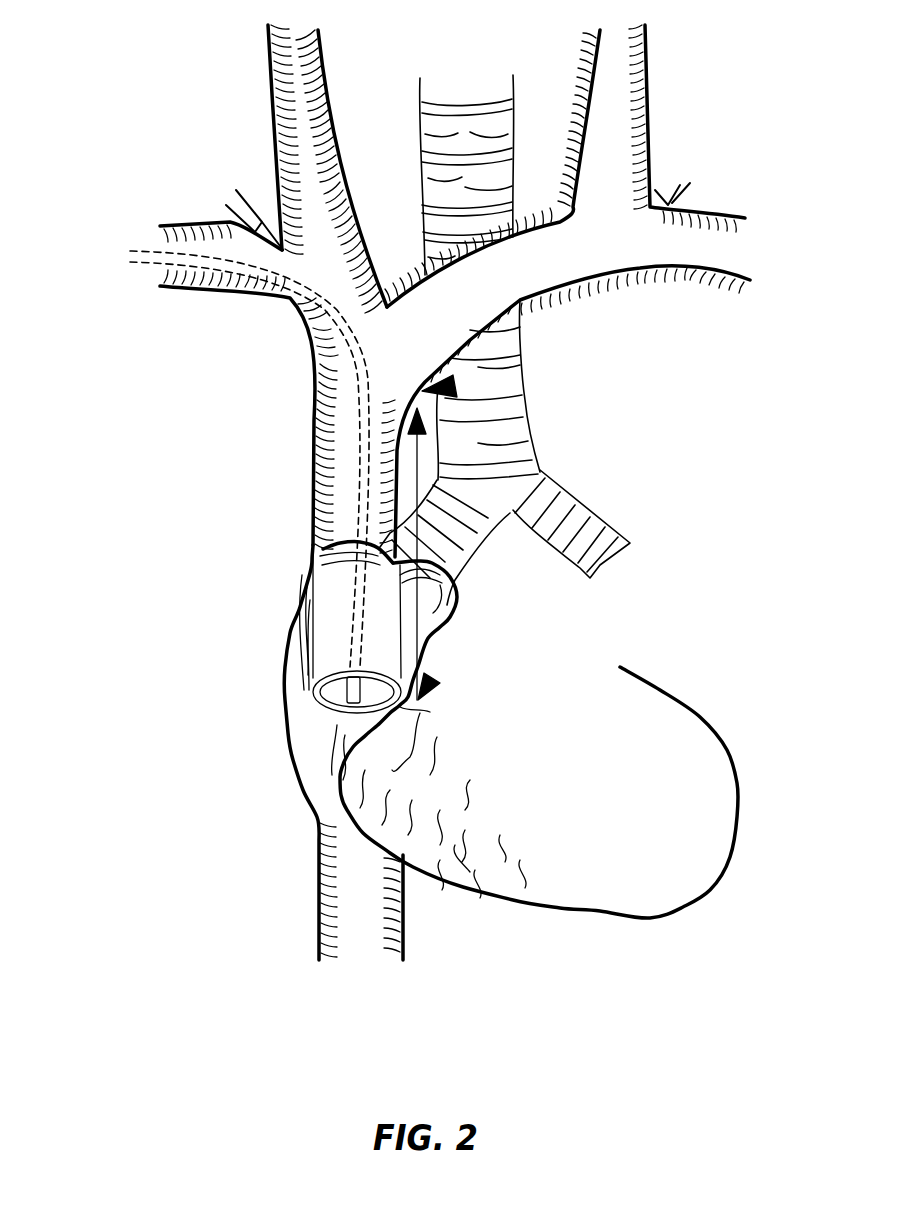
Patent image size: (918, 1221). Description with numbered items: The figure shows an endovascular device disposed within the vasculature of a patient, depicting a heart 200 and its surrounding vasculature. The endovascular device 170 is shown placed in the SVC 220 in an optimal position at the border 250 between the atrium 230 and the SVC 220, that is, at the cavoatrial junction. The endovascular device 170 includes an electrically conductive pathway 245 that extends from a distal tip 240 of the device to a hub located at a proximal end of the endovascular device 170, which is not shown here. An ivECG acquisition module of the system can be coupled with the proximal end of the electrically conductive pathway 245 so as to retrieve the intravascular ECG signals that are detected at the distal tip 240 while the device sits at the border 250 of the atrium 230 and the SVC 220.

The heart 200 is at (255, 172).
The endovascular device 170 is at (312, 448).
The electrically conductive pathway 245 is at (360, 618).
The distal tip 240 is at (313, 697).
The atrium 230 is at (313, 737).
The border 250 is at (400, 705).
The SVC 220 is at (424, 690).